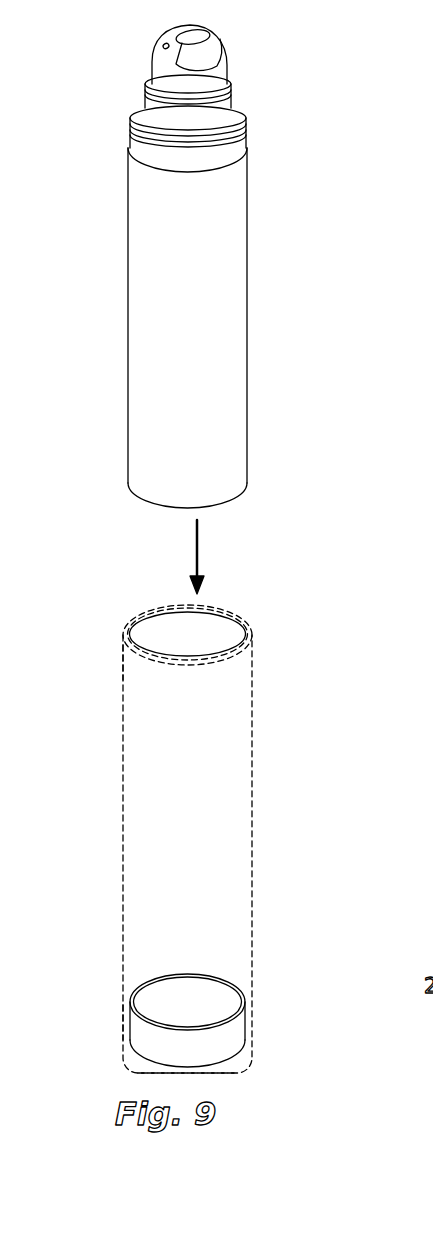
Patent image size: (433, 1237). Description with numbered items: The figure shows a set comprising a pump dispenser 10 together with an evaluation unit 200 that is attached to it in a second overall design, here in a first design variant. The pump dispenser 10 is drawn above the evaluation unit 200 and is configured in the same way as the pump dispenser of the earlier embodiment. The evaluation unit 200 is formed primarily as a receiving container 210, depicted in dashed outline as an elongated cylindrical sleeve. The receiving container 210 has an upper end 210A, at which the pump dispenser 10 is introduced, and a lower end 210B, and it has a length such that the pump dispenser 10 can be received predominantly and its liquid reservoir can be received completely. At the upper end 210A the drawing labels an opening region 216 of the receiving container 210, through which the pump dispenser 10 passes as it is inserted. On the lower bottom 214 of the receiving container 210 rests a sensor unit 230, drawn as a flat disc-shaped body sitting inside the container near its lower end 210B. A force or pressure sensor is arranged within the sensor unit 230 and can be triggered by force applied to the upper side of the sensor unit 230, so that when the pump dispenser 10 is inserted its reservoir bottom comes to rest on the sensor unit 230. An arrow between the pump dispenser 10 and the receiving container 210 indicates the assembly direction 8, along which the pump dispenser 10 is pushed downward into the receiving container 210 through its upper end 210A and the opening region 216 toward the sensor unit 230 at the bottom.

The pump dispenser 10 is at (276, 318).
The assembly direction 8 is at (197, 548).
The evaluation unit 200 is at (211, 855).
The receiving container 210 is at (248, 842).
The upper end of the receiving container 210A is at (122, 664).
The lower end of the receiving container 210B is at (122, 1023).
The opening 216 is at (222, 683).
The sensor unit 230 is at (239, 1030).
The lower bottom 214 is at (223, 1068).